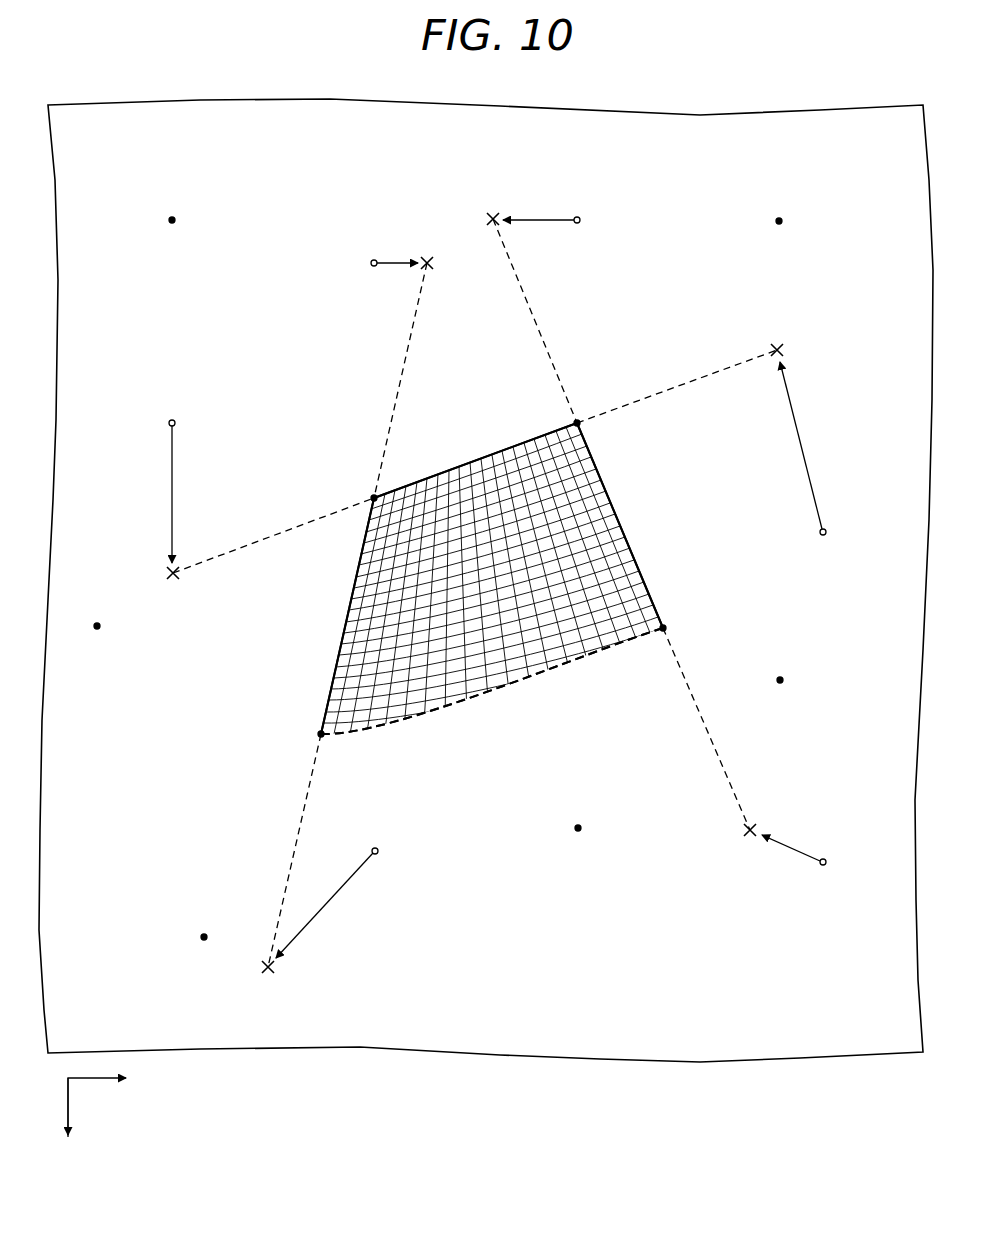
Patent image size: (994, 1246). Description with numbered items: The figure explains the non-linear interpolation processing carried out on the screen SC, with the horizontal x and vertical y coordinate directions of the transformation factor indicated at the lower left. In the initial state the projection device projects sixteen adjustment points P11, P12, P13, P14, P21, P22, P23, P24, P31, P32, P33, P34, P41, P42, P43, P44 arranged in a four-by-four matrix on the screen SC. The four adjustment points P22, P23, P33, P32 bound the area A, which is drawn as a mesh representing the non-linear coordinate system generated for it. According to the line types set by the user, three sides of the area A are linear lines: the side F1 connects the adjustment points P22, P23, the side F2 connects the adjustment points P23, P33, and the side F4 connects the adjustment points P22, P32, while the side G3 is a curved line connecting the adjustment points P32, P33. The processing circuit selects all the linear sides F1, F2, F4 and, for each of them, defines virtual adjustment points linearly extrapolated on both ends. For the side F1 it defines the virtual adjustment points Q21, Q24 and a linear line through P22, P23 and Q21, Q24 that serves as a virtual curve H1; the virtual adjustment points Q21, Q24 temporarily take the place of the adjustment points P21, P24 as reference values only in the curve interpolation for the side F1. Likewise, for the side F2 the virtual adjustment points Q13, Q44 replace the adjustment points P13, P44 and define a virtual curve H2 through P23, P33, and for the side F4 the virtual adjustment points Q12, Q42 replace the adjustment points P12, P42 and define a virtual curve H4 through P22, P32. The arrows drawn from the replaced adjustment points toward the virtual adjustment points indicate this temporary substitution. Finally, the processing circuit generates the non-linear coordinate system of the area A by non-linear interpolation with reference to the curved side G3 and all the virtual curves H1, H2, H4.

The screen SC is at (797, 128).
The area A is at (510, 447).
The side F1 is at (473, 462).
The side F2 is at (622, 524).
The side F4 is at (351, 600).
The side G3 is at (507, 689).
The virtual curve H1 is at (688, 378).
The virtual curve H2 is at (722, 763).
The virtual curve H4 is at (293, 855).
The adjustment point P11 is at (172, 218).
The adjustment point P12 is at (375, 260).
The adjustment point P13 is at (577, 216).
The adjustment point P14 is at (780, 217).
The adjustment point P21 is at (173, 420).
The adjustment point P22 is at (373, 494).
The adjustment point P23 is at (578, 419).
The adjustment point P24 is at (823, 529).
The adjustment point P31 is at (98, 622).
The adjustment point P32 is at (321, 738).
The adjustment point P33 is at (663, 632).
The adjustment point P34 is at (781, 676).
The adjustment point P41 is at (204, 933).
The adjustment point P42 is at (376, 855).
The adjustment point P43 is at (579, 832).
The adjustment point P44 is at (824, 859).
The virtual adjustment point Q12 is at (427, 270).
The virtual adjustment point Q13 is at (493, 212).
The virtual adjustment point Q21 is at (175, 580).
The virtual adjustment point Q24 is at (778, 343).
The virtual adjustment point Q42 is at (270, 972).
The virtual adjustment point Q44 is at (748, 838).
The x coordinate x is at (110, 1101).
The y coordinate y is at (65, 1120).